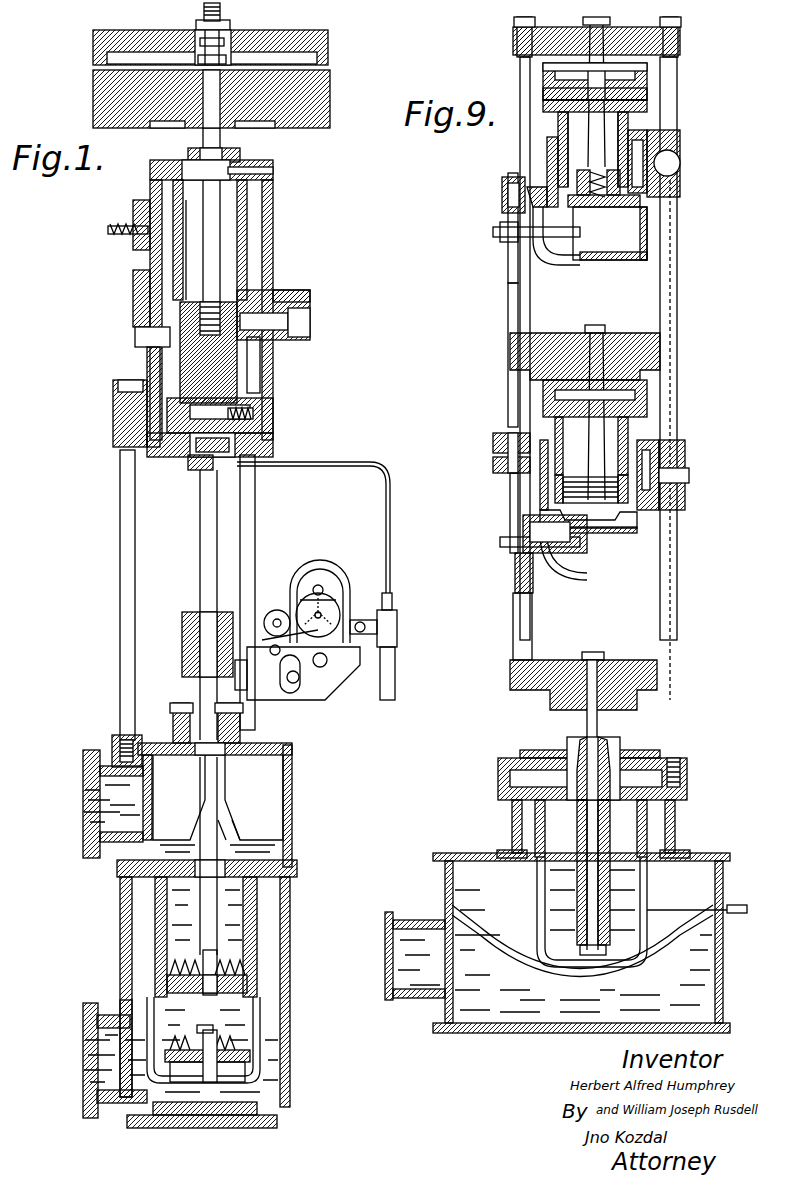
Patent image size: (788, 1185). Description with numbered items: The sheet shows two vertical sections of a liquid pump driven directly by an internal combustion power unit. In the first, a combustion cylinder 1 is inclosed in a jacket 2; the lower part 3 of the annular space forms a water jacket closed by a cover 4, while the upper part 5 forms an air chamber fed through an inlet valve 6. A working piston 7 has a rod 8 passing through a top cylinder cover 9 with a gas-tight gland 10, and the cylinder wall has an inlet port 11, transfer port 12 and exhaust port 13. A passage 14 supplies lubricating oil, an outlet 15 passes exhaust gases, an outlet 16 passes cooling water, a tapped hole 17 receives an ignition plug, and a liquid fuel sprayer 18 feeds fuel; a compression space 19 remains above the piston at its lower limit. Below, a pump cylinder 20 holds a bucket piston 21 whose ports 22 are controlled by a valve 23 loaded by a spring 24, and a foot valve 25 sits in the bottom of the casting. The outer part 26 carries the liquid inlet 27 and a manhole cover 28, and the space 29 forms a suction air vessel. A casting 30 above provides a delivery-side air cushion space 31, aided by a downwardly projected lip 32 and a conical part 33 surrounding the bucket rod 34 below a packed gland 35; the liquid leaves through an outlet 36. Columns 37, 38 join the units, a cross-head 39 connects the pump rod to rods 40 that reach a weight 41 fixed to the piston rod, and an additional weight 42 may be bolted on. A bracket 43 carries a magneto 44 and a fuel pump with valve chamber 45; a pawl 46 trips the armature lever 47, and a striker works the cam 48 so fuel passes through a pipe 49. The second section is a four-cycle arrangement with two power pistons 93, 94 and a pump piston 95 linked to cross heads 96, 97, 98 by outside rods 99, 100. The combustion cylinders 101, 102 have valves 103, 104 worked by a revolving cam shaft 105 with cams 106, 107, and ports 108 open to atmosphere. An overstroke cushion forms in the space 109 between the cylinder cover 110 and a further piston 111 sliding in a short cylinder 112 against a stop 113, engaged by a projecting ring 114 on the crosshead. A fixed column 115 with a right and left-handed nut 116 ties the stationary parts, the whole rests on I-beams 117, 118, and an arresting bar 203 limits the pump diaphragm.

In FIG. 1, the combustion cylinder 1 is at (248, 245).
In FIG. 1, the jacket 2 is at (262, 268).
In FIG. 1, the lower part of annular space 3 is at (260, 367).
In FIG. 1, the cover 4 is at (262, 450).
In FIG. 1, the upper part of annular space 5 is at (250, 218).
In FIG. 1, the inlet valve 6 is at (150, 238).
In FIG. 1, the working piston 7 is at (195, 365).
In FIG. 1, the piston rod 8 is at (211, 215).
In FIG. 1, the top cylinder cover 9 is at (152, 160).
In FIG. 1, the gas-tight gland 10 is at (225, 135).
In FIG. 1, the inlet port 11 is at (187, 250).
In FIG. 1, the transfer port 12 is at (175, 312).
In FIG. 1, the exhaust port 13 is at (285, 300).
In FIG. 1, the passage 14 is at (273, 172).
In FIG. 1, the outlet for exhaust gases 15 is at (300, 320).
In FIG. 1, the outlet for cooling water 16 is at (140, 337).
In FIG. 1, the tapped hole 17 is at (265, 417).
In FIG. 1, the liquid fuel sprayer 18 is at (190, 470).
In FIG. 1, the compression space 19 is at (265, 398).
In FIG. 1, the pump cylinder 20 is at (250, 912).
In FIG. 1, the bucket piston 21 is at (258, 985).
In FIG. 1, the ports 22 is at (265, 1022).
In FIG. 1, the valve 23 is at (258, 965).
In FIG. 1, the spring 24 is at (175, 962).
In FIG. 1, the suction or foot valve 25 is at (245, 1052).
In FIG. 1, the outer part of casting 26 is at (120, 945).
In FIG. 1, the inlet for liquid 27 is at (88, 1058).
In FIG. 1, the manhole cover 28 is at (195, 1128).
In FIG. 1, the space 29 is at (140, 908).
In FIG. 1, the casting 30 is at (292, 790).
In FIG. 1, the space 31 is at (254, 797).
In FIG. 1, the downwardly projected lip 32 is at (179, 797).
In FIG. 1, the conical part 33 is at (225, 820).
In FIG. 1, the bucket rod 34 is at (205, 905).
In FIG. 1, the packed gland 35 is at (180, 735).
In FIG. 1, the outlet for liquid 36 is at (92, 805).
In FIG. 1, the column 37 is at (122, 528).
In FIG. 1, the column 38 is at (252, 490).
In FIG. 1, the cross-head 39 is at (182, 650).
In FIG. 1, the rod 40 is at (205, 542).
In FIG. 1, the weight 41 is at (305, 97).
In FIG. 1, the additional weight 42 is at (330, 42).
In FIG. 1, the bracket 43 is at (335, 670).
In FIG. 1, the magneto ignition machine 44 is at (330, 605).
In FIG. 1, the valve chamber 45 is at (397, 625).
In FIG. 1, the pawl 46 is at (255, 625).
In FIG. 1, the armature lever 47 is at (290, 640).
In FIG. 1, the cam 48 is at (280, 605).
In FIG. 1, the pipe 49 is at (385, 495).
In FIG. 9, the power piston 93 is at (650, 205).
In FIG. 9, the power piston 94 is at (640, 505).
In FIG. 9, the pump piston 95 is at (615, 920).
In FIG. 9, the cross head 96 is at (632, 38).
In FIG. 9, the cross head 97 is at (622, 345).
In FIG. 9, the cross head 98 is at (622, 668).
In FIG. 9, the outside rod 99 is at (520, 148).
In FIG. 9, the outside rod 100 is at (655, 100).
In FIG. 9, the combustion cylinder 101 is at (548, 142).
In FIG. 9, the combustion cylinder 102 is at (560, 478).
In FIG. 9, the valve 103 is at (585, 236).
In FIG. 9, the valve 104 is at (585, 542).
In FIG. 9, the revolving cam shaft 105 is at (510, 288).
In FIG. 9, the cam 106 is at (505, 228).
In FIG. 9, the cam 107 is at (505, 540).
In FIG. 9, the ports 108 is at (632, 115).
In FIG. 9, the space 109 is at (545, 85).
In FIG. 9, the cylinder cover 110 is at (650, 90).
In FIG. 9, the further piston 111 is at (650, 78).
In FIG. 9, the short cylinder 112 is at (545, 68).
In FIG. 9, the stop 113 is at (650, 62).
In FIG. 9, the projecting ring 114 is at (565, 62).
In FIG. 9, the fixed column 115 is at (680, 318).
In FIG. 9, the right and left-handed nut 116 is at (688, 472).
In FIG. 9, the I-beam 117 is at (510, 825).
In FIG. 9, the I-beam 118 is at (670, 825).
In FIG. 9, the arresting bar 203 is at (545, 975).